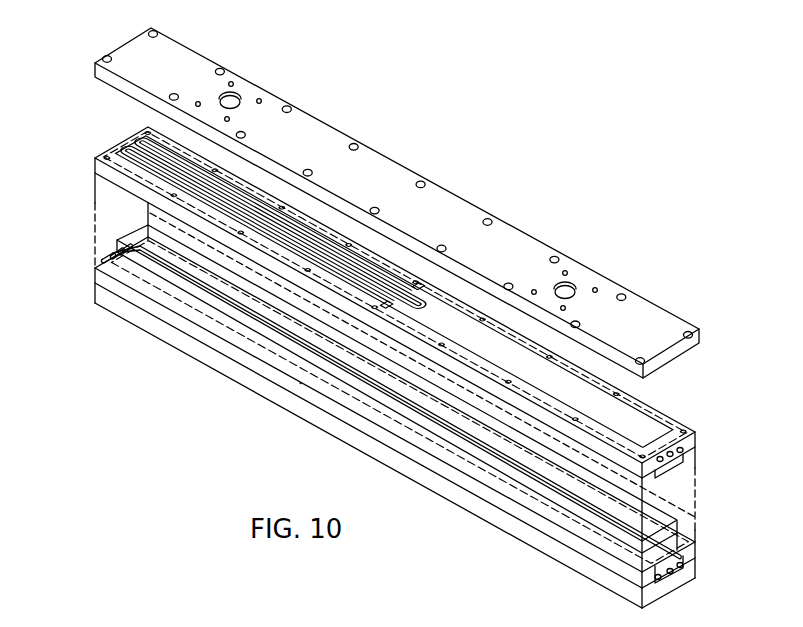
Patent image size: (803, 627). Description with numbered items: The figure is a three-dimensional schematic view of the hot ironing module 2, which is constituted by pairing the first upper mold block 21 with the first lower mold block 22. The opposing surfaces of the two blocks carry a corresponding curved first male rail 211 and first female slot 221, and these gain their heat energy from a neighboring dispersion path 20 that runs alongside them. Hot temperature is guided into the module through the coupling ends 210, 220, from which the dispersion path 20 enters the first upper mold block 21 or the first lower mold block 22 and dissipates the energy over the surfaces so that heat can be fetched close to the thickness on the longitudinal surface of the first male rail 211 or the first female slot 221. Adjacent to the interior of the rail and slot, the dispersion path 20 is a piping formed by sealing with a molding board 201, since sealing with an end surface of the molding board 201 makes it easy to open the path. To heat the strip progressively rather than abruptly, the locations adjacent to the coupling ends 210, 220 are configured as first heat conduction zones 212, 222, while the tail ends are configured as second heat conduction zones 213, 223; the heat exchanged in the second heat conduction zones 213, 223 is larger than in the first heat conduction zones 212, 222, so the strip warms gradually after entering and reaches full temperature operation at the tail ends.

The hot ironing module 2 is at (408, 150).
The molding board 201 is at (515, 243).
The dispersion path 20 is at (656, 425).
The first upper mold block 21 is at (122, 150).
The first lower mold block 22 is at (93, 275).
The coupling end 210 is at (696, 444).
The first male rail 211 is at (680, 463).
The first heat conduction zone 212 is at (480, 372).
The second heat conduction zone 213 is at (228, 230).
The coupling end 220 is at (684, 574).
The first female slot 221 is at (653, 543).
The first heat conduction zone 222 is at (548, 523).
The second heat conduction zone 223 is at (255, 352).